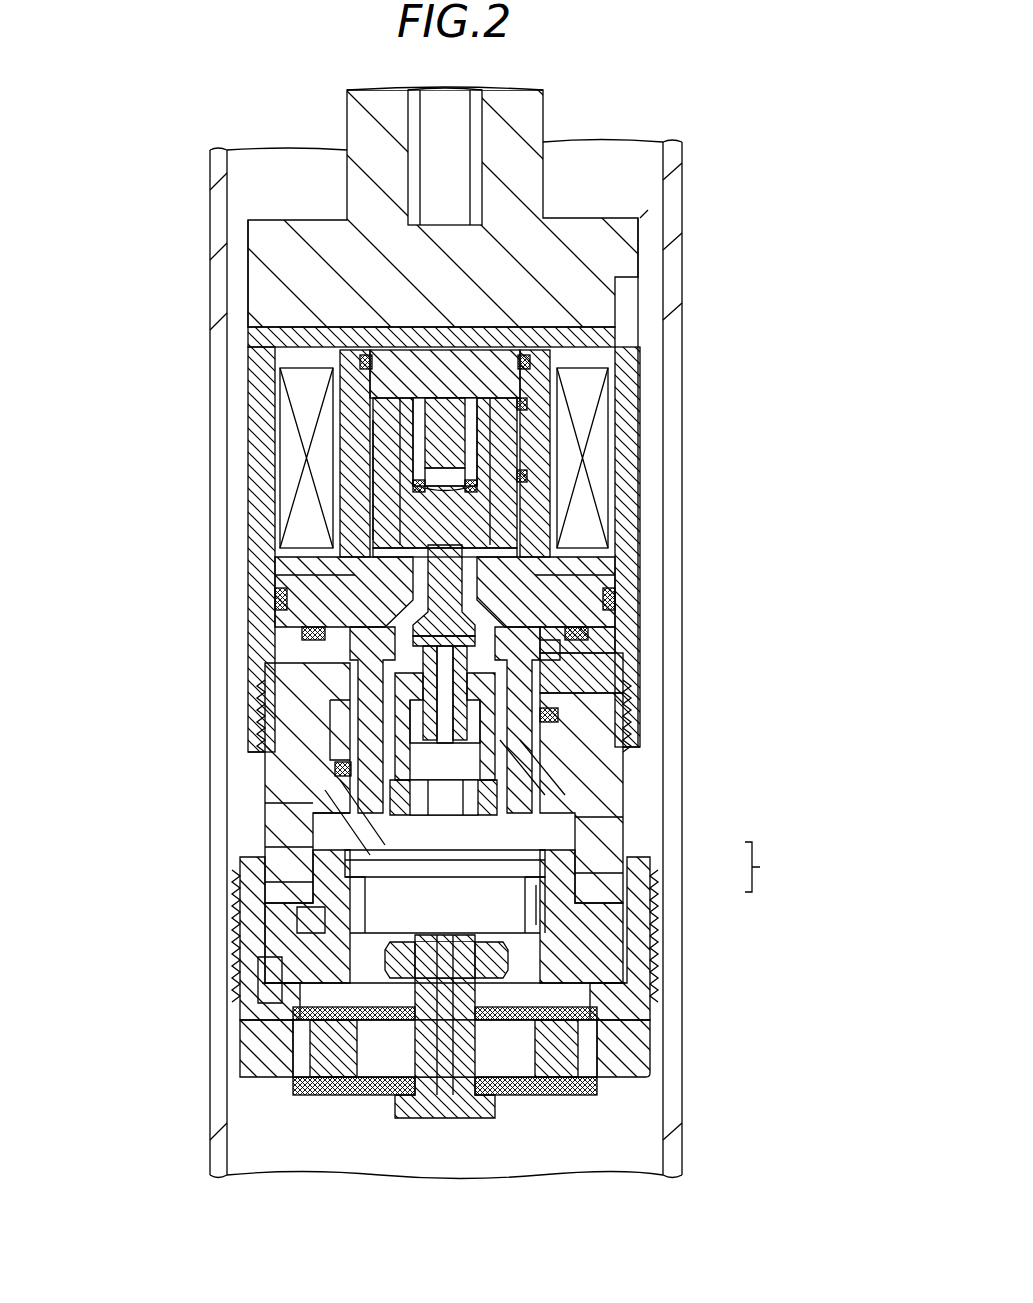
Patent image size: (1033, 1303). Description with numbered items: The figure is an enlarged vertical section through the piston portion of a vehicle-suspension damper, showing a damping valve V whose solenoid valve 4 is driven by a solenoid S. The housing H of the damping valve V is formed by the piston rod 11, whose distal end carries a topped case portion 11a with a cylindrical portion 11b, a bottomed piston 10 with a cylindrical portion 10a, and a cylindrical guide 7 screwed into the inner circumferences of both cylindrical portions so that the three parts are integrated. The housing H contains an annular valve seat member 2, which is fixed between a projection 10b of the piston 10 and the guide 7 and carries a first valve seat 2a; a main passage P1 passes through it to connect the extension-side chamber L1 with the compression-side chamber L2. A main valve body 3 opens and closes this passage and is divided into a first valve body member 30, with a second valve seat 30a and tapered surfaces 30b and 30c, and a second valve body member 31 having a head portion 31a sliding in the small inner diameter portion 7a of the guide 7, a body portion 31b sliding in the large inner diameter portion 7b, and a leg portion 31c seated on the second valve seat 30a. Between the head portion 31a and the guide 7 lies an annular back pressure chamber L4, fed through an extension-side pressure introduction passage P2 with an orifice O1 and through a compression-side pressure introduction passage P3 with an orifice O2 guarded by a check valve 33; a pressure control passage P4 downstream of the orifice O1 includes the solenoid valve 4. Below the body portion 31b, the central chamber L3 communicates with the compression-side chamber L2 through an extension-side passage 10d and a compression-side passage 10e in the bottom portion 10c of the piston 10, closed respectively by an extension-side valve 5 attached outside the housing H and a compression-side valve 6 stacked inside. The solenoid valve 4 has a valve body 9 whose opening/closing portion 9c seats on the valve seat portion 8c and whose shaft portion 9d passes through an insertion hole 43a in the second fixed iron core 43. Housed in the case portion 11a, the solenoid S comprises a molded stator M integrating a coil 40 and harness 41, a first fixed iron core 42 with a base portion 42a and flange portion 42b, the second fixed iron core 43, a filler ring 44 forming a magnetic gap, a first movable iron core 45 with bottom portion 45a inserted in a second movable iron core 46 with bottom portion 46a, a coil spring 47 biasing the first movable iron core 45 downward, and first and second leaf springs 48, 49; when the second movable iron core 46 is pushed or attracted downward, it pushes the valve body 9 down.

The piston rod 11 is at (345, 117).
The case portion 11a is at (240, 223).
The cylindrical portion 11b is at (645, 432).
The damping valve V is at (242, 262).
The solenoid S is at (268, 337).
The molded stator M is at (620, 281).
The housing H is at (644, 298).
The extension-side chamber L1 is at (606, 196).
The harness 41 is at (541, 118).
The first fixed iron core 42 is at (300, 347).
The base portion 42a is at (590, 372).
The flange portion 42b is at (602, 345).
The coil 40 is at (300, 395).
The coil spring 47 is at (345, 420).
The filler ring 44 is at (355, 445).
The first movable iron core 45 is at (512, 420).
The bottom portion 45a is at (378, 470).
The second movable iron core 46 is at (472, 470).
The bottom portion 46a is at (405, 520).
The first leaf spring 48 is at (525, 500).
The second leaf spring 49 is at (520, 550).
The second fixed iron core 43 is at (270, 579).
The insertion hole 43a is at (582, 576).
The shaft portion 9d is at (276, 598).
The opening/closing portion 9c is at (308, 634).
The valve body 9 is at (598, 600).
The solenoid valve 4 is at (300, 620).
The valve seat portion 8c is at (578, 636).
The small inner diameter portion 7a is at (575, 660).
The guide 7 is at (602, 810).
The large inner diameter portion 7b is at (572, 750).
The orifice O1 is at (560, 720).
The extension-side pressure introduction passage P2 is at (563, 786).
The back pressure chamber L4 is at (776, 700).
The second valve body member 31 is at (598, 850).
The head portion 31a is at (262, 690).
The body portion 31b is at (300, 790).
The leg portion 31c is at (320, 825).
The pressure control passage P4 is at (356, 710).
The check valve 33 is at (332, 740).
The orifice O2 is at (333, 770).
The compression-side pressure introduction passage P3 is at (398, 846).
The tapered surface 30c is at (360, 882).
The central chamber L3 is at (464, 923).
The first valve seat 2a is at (532, 895).
The first valve body member 30 is at (600, 890).
The main valve body 3 is at (760, 867).
The second valve seat 30a is at (278, 856).
The tapered surface 30b is at (272, 905).
The main passage P1 is at (272, 880).
The valve seat member 2 is at (592, 942).
The piston 10 is at (243, 1075).
The cylindrical portion 10a is at (640, 955).
The projection 10b is at (592, 1000).
The bottom portion 10c is at (300, 1077).
The extension-side passage 10d is at (575, 1040).
The compression-side passage 10e is at (280, 1030).
The compression-side valve 6 is at (258, 995).
The extension-side valve 5 is at (497, 1092).
The compression-side chamber L2 is at (558, 1149).